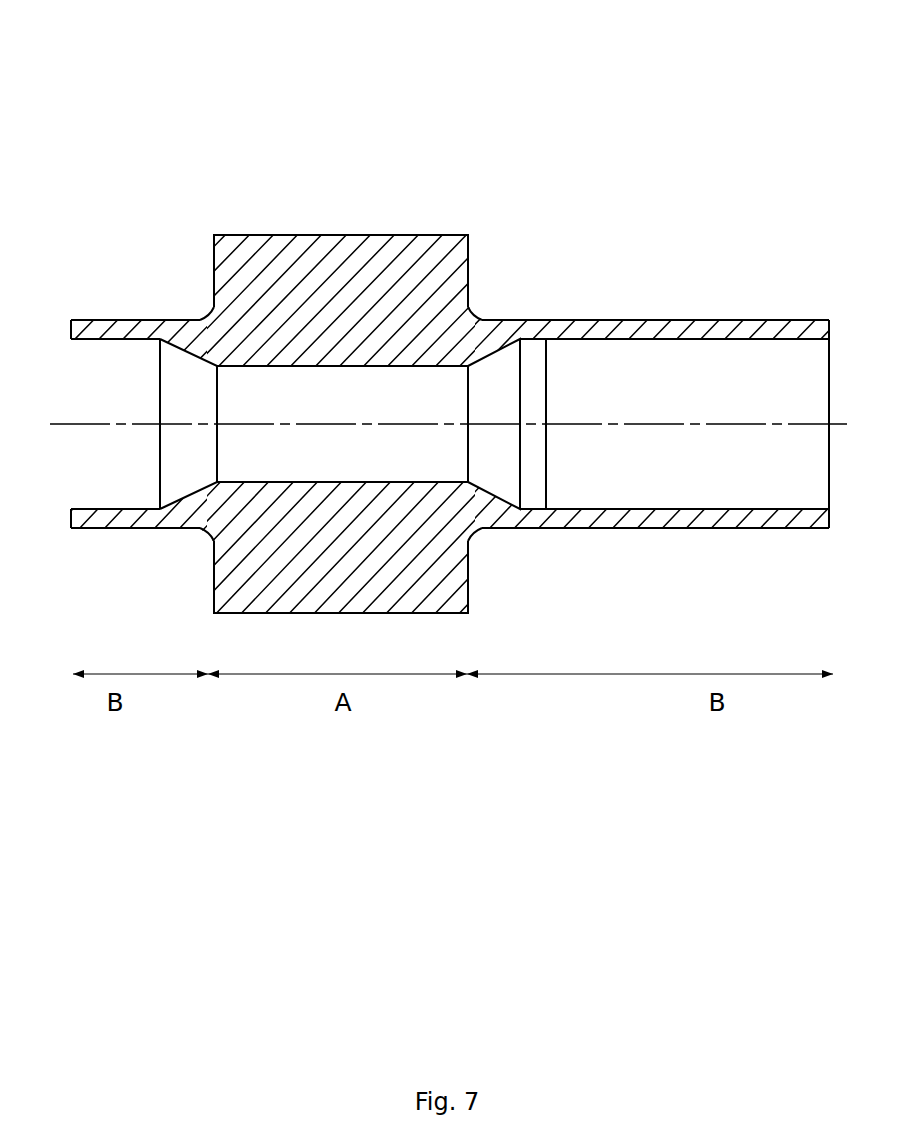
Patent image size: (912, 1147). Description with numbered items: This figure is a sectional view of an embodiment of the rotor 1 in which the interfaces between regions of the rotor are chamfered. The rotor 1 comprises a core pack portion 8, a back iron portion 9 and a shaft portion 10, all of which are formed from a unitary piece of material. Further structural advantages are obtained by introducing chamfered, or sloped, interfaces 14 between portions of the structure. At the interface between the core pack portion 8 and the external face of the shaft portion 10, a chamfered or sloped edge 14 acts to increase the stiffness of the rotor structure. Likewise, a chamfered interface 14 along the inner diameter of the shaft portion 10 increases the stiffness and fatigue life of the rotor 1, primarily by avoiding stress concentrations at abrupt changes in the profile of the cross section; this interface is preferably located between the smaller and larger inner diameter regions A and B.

The rotor 1 is at (459, 82).
The core pack portion 8 is at (390, 270).
The back iron portion 9 is at (427, 340).
The shaft portion 10 is at (583, 320).
The chamfered interface 14 is at (486, 365).